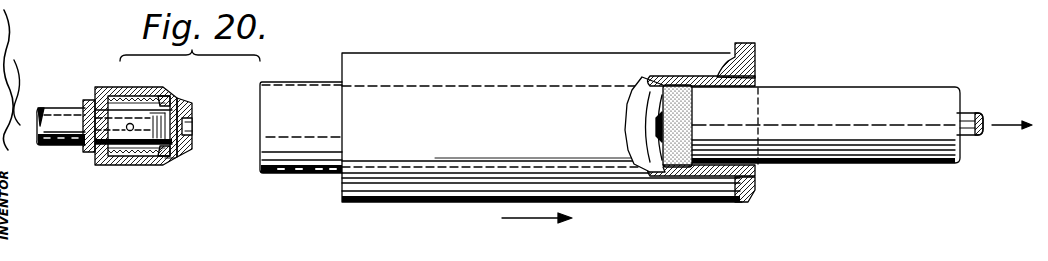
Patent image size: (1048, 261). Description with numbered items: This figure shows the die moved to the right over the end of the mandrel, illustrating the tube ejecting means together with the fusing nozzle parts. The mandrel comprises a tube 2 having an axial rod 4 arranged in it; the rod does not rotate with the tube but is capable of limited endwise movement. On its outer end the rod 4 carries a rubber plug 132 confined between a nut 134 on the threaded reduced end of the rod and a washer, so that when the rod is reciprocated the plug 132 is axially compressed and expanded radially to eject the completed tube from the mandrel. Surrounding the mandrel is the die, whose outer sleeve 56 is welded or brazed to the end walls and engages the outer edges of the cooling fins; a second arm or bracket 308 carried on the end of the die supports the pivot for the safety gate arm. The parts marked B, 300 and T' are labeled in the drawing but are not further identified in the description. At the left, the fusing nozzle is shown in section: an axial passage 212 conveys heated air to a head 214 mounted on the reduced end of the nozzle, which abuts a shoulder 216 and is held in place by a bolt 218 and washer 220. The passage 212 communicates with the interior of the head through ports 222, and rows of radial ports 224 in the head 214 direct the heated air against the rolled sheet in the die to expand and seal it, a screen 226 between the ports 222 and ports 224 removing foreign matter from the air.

The axial passage 212 is at (51, 149).
The head 214 is at (94, 99).
The shoulder 216 is at (90, 153).
The bolt 218 is at (194, 121).
The washer 220 is at (180, 98).
The ports 222 is at (128, 132).
The radial ports 224 is at (149, 88).
The screen 226 is at (166, 163).
The barrel B is at (388, 53).
The outer sleeve 56 is at (504, 38).
The second arm or bracket 308 is at (746, 43).
The bottom flange 300 is at (757, 197).
The tube 2 is at (908, 87).
The cap T' is at (613, 124).
The nut 134 is at (655, 140).
The rubber plug 132 is at (687, 114).
The axial rod 4 is at (977, 113).